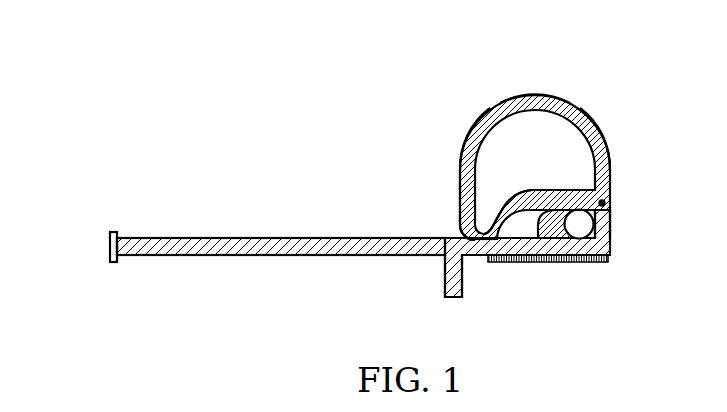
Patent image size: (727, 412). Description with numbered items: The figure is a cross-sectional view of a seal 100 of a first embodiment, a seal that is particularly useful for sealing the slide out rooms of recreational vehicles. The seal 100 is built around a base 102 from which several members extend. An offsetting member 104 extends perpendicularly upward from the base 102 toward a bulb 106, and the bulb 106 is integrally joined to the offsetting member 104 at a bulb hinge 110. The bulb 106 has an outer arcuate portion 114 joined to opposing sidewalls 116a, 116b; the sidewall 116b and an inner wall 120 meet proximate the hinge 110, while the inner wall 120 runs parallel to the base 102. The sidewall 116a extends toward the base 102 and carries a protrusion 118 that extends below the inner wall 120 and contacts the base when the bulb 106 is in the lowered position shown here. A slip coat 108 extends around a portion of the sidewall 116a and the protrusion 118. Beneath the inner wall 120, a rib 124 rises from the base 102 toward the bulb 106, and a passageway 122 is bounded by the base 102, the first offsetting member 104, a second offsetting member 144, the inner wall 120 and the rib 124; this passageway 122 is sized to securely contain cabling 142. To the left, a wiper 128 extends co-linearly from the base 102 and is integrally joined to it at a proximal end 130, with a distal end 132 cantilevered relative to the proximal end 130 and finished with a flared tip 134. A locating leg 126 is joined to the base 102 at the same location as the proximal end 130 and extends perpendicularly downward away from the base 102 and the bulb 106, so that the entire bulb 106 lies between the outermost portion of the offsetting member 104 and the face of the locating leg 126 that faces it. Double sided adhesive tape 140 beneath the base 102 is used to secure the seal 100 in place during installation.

The seal 100 is at (190, 88).
The base 102 is at (530, 264).
The offsetting member 104 is at (610, 247).
The bulb 106 is at (462, 63).
The slip coat 108 is at (460, 175).
The bulb hinge 110 is at (610, 218).
The outer arcuate portion 114 is at (535, 95).
The sidewall 116a is at (470, 138).
The sidewall 116b is at (598, 132).
The protrusion 118 is at (459, 210).
The inner wall 120 is at (570, 190).
The passageway 122 is at (579, 226).
The rib 124 is at (548, 238).
The locating leg 126 is at (445, 290).
The wiper 128 is at (225, 263).
The proximal end 130 is at (472, 241).
The distal end 132 is at (109, 244).
The flared tip 134 is at (115, 256).
The adhesive tape 140 is at (523, 263).
The cabling 142 is at (548, 212).
The second offsetting member 144 is at (606, 201).